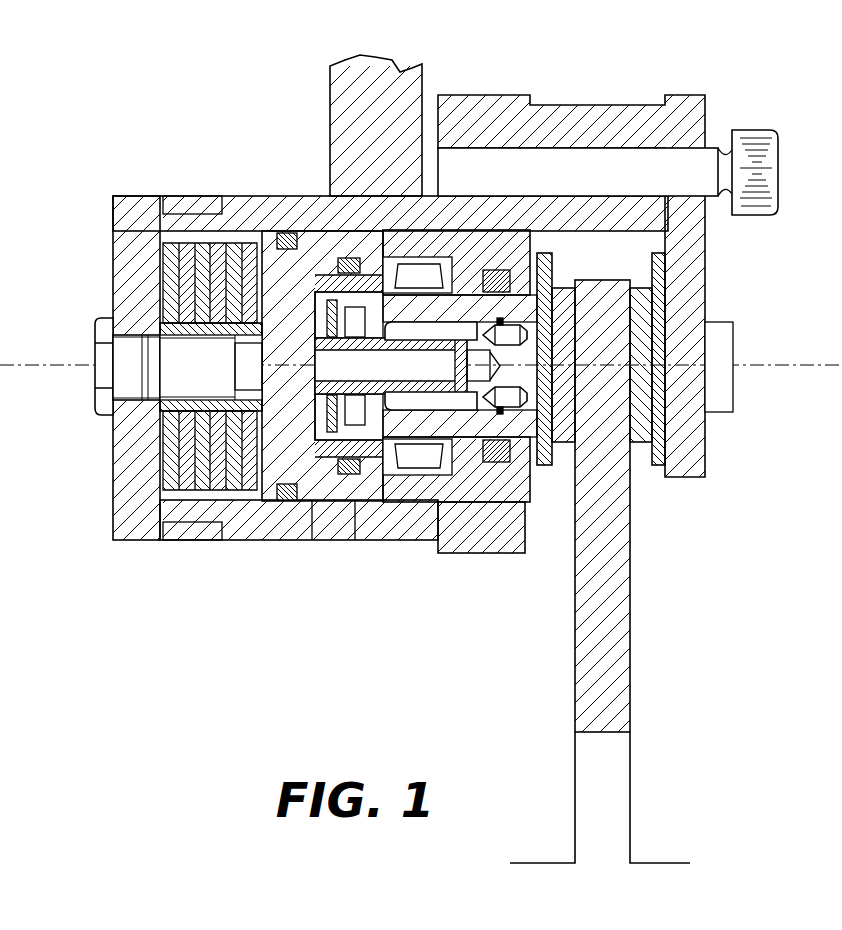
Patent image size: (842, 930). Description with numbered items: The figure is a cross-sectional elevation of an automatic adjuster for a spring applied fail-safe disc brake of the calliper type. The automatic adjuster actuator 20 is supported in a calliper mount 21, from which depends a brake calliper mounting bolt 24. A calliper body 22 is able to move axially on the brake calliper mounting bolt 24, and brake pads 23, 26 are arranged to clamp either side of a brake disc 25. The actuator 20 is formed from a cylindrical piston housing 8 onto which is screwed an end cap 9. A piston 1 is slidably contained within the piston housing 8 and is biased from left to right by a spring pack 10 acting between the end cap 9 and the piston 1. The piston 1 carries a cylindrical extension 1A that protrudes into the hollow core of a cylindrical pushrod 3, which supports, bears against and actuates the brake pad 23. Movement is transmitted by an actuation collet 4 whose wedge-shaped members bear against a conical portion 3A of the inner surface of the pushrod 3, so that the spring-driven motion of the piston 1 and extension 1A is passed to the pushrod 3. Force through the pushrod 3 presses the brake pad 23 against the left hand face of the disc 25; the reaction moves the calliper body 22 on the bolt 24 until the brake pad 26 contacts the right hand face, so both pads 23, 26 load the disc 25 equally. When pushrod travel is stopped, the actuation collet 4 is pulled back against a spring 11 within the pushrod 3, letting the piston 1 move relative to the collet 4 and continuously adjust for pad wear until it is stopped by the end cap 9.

The piston 1 is at (290, 455).
The cylindrical extension 1A is at (448, 300).
The pushrod 3 is at (467, 427).
The conical portion 3A is at (392, 300).
The actuation collet 4 is at (370, 430).
The piston housing 8 is at (283, 210).
The end cap 9 is at (130, 478).
The spring pack 10 is at (188, 480).
The spring 11 is at (338, 420).
The automatic adjuster actuator 20 is at (168, 196).
The calliper mount 21 is at (385, 88).
The calliper body 22 is at (497, 125).
The brake pad 23 is at (560, 427).
The brake calliper mounting bolt 24 is at (752, 160).
The brake disc 25 is at (620, 655).
The brake pad 26 is at (640, 430).